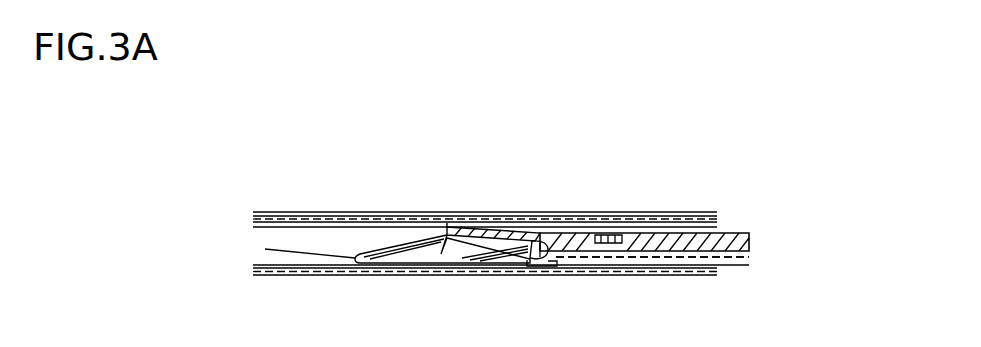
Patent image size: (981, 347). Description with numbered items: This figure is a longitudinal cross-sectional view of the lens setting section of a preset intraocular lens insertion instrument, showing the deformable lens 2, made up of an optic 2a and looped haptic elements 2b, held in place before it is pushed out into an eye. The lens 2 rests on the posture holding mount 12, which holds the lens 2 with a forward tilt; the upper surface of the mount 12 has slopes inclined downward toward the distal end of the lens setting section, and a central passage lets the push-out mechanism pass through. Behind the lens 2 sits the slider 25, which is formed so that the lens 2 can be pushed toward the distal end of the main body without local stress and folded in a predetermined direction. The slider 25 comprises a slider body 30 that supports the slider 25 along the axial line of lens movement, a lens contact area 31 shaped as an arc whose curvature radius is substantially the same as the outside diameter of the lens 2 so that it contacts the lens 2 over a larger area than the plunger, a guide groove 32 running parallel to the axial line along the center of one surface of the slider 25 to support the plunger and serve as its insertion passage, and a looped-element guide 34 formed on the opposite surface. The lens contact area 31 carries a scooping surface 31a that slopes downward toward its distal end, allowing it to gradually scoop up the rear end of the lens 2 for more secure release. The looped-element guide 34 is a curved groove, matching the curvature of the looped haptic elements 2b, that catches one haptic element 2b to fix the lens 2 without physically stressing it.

The intraocular lens 2 is at (380, 234).
The optic 2a is at (441, 254).
The looped haptic elements 2b is at (311, 247).
The posture holding mount 12 is at (514, 232).
The slider 25 is at (679, 234).
The slider body 30 is at (730, 233).
The lens contact area 31 is at (540, 241).
The scooping surface 31a is at (527, 266).
The guide groove 32 is at (662, 258).
The looped-element guide 34 is at (607, 235).